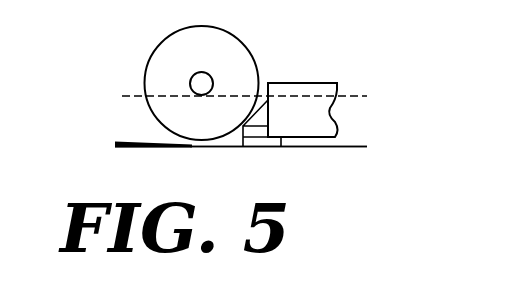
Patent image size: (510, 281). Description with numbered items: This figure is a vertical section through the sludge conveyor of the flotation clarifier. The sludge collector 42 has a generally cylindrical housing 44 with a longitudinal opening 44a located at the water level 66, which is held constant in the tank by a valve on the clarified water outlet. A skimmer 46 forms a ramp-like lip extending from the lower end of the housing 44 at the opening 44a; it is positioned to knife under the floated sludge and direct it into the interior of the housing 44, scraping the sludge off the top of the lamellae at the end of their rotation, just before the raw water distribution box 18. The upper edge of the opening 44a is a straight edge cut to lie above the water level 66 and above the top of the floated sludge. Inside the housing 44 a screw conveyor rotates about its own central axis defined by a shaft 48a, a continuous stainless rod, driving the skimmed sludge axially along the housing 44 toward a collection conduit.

The raw water distribution box 18 is at (322, 82).
The sludge collector 42 is at (270, 56).
The housing 44 is at (232, 37).
The longitudinal opening 44a is at (130, 118).
The skimmer 46 is at (190, 148).
The shaft 48a is at (192, 83).
The water level 66 is at (128, 95).